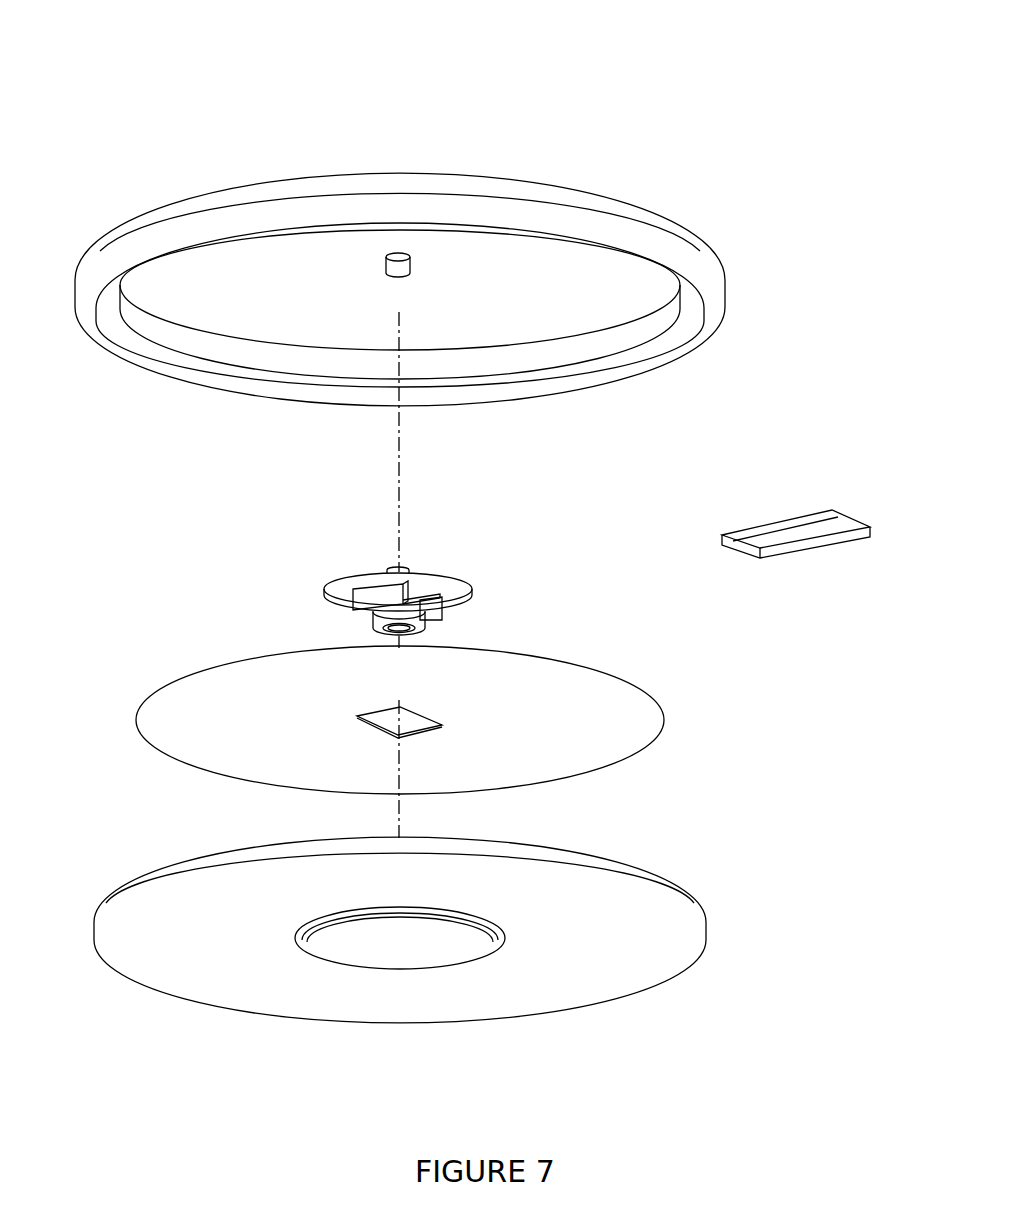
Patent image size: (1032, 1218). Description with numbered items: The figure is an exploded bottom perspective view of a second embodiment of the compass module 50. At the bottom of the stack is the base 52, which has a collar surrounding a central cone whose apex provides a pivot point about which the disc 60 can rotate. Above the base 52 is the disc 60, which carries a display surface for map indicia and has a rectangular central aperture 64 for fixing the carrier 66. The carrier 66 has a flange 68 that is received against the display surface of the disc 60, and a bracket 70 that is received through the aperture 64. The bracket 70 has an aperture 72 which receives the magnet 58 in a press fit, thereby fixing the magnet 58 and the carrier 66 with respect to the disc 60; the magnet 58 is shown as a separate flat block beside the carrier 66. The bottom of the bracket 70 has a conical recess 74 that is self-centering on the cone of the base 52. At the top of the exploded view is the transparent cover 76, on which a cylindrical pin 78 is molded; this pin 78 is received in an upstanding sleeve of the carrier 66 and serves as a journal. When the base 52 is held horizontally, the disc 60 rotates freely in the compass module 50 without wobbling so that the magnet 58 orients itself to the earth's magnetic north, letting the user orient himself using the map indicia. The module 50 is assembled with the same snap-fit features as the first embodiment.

The compass module 50 is at (262, 163).
The base 52 is at (252, 972).
The magnet 58 is at (752, 527).
The disc 60 is at (245, 692).
The rectangular central aperture 64 is at (420, 725).
The carrier 66 is at (333, 573).
The flange 68 is at (448, 587).
The bracket 70 is at (410, 619).
The aperture 72 is at (427, 603).
The conical recess 74 is at (420, 626).
The transparent cover 76 is at (622, 205).
The cylindrical pin 78 is at (412, 266).